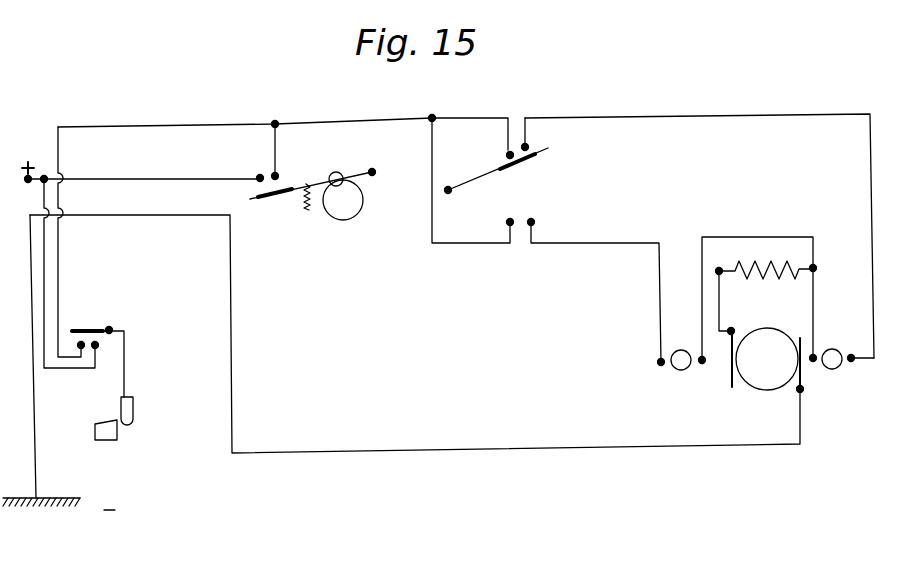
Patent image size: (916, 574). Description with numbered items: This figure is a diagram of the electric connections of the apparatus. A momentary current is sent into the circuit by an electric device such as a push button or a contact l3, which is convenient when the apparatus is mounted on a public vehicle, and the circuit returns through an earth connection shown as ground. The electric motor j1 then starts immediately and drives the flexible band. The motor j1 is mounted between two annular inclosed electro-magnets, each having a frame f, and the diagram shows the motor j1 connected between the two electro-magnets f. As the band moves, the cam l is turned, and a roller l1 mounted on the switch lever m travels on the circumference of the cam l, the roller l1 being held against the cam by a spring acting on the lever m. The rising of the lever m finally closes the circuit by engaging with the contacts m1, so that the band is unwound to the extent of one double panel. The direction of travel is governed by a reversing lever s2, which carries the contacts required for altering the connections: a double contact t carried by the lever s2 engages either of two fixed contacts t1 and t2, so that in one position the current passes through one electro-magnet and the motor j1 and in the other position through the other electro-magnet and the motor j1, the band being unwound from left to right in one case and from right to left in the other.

The contacts m1 is at (272, 170).
The lever m is at (298, 184).
The roller l1 is at (340, 171).
The cam l is at (339, 212).
The contact l3 is at (129, 416).
The reversing lever s2 is at (496, 174).
The double contact t is at (520, 156).
The fixed contact t2 is at (518, 147).
The fixed contact t1 is at (532, 230).
The frame f is at (678, 368).
The electric motor j1 is at (756, 375).
The earth connection ground is at (59, 504).